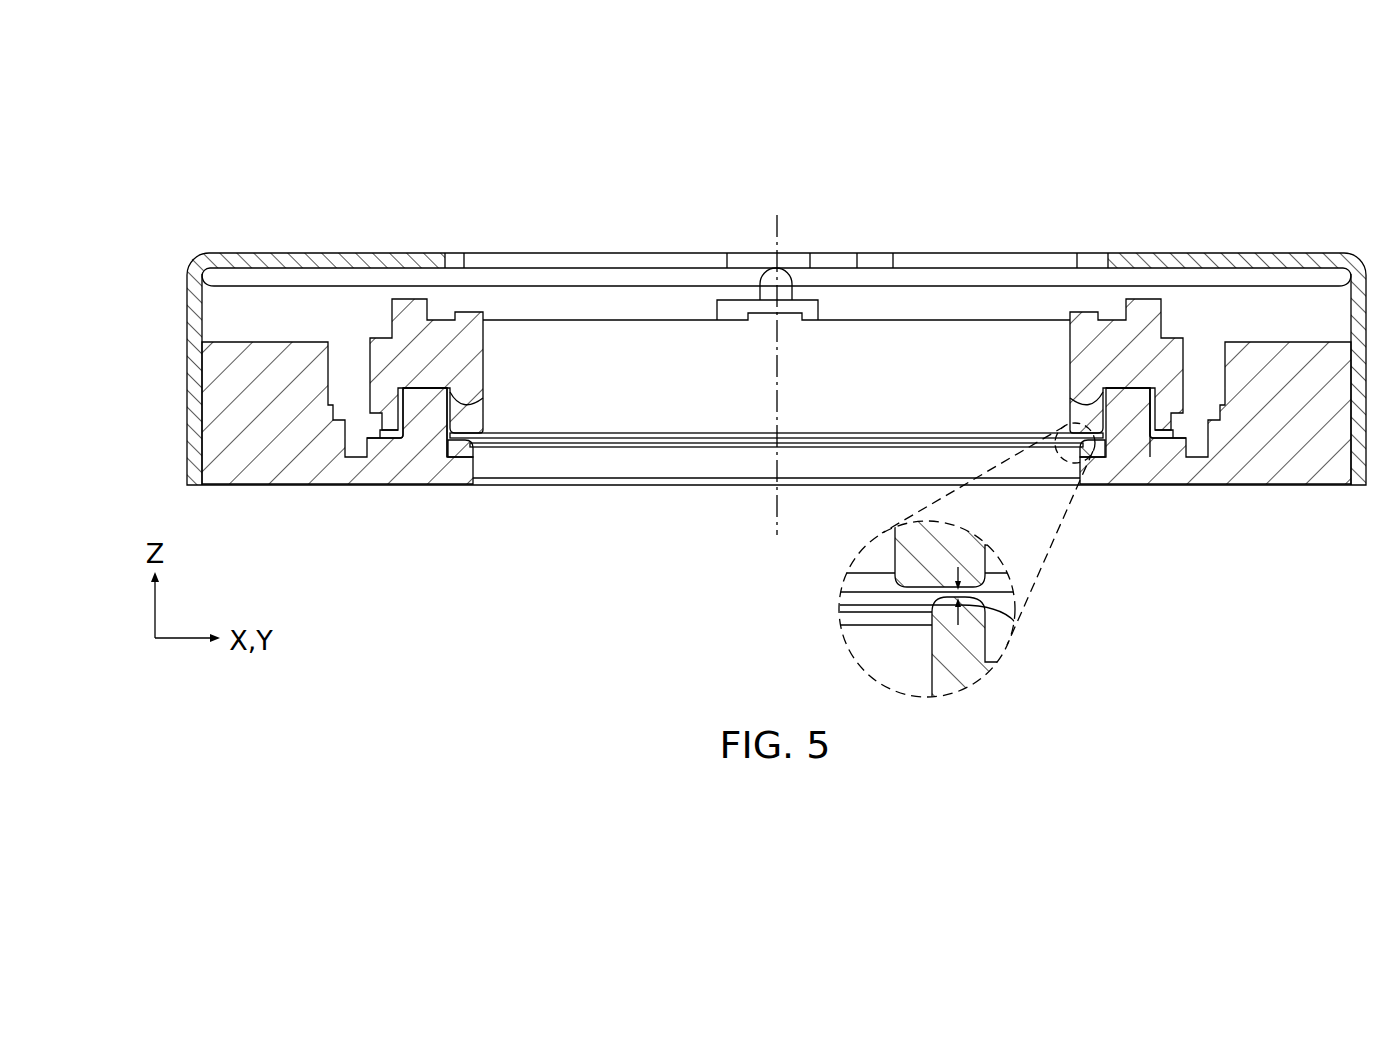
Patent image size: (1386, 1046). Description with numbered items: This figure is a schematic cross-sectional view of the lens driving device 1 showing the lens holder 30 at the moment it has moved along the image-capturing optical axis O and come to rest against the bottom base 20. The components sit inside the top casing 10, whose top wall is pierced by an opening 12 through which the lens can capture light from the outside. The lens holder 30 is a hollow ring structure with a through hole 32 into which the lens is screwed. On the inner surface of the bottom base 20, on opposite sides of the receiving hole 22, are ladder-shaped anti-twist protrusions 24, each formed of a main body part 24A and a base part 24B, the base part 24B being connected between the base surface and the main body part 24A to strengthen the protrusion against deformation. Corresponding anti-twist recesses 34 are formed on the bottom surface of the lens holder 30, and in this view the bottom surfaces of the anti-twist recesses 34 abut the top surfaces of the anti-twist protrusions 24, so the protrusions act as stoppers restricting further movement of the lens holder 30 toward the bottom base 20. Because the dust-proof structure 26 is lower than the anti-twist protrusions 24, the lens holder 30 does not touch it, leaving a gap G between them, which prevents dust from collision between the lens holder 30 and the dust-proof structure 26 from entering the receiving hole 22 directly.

The lens driving device 1 is at (179, 142).
The top casing 10 is at (264, 243).
The opening 12 is at (1106, 266).
The bottom base 20 is at (264, 496).
The receiving hole 22 is at (475, 462).
The anti-twist protrusion 24 is at (777, 495).
The main body part 24A is at (428, 400).
The base part 24B is at (477, 557).
The dust-proof structure 26 is at (467, 452).
The lens holder 30 is at (406, 300).
The through hole 32 is at (482, 447).
The anti-twist recess 34 is at (470, 392).
The gap G is at (958, 600).
The image-capturing optical axis O is at (774, 358).